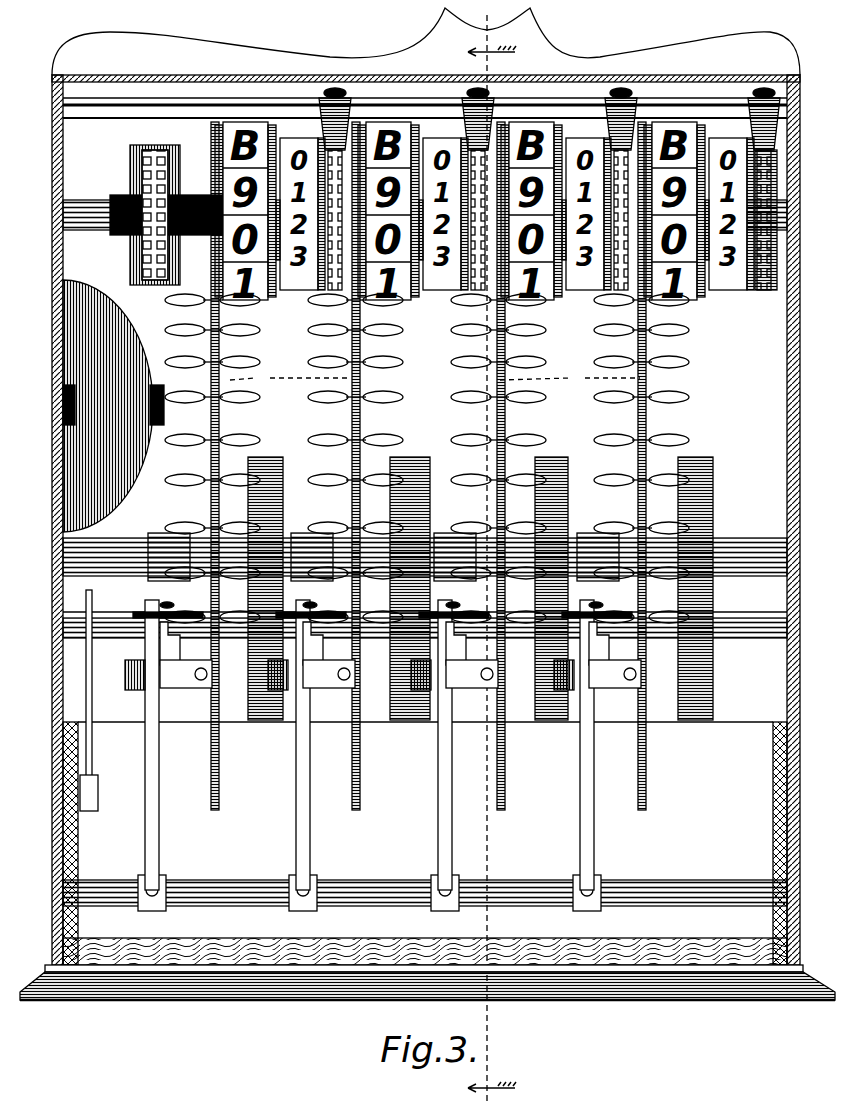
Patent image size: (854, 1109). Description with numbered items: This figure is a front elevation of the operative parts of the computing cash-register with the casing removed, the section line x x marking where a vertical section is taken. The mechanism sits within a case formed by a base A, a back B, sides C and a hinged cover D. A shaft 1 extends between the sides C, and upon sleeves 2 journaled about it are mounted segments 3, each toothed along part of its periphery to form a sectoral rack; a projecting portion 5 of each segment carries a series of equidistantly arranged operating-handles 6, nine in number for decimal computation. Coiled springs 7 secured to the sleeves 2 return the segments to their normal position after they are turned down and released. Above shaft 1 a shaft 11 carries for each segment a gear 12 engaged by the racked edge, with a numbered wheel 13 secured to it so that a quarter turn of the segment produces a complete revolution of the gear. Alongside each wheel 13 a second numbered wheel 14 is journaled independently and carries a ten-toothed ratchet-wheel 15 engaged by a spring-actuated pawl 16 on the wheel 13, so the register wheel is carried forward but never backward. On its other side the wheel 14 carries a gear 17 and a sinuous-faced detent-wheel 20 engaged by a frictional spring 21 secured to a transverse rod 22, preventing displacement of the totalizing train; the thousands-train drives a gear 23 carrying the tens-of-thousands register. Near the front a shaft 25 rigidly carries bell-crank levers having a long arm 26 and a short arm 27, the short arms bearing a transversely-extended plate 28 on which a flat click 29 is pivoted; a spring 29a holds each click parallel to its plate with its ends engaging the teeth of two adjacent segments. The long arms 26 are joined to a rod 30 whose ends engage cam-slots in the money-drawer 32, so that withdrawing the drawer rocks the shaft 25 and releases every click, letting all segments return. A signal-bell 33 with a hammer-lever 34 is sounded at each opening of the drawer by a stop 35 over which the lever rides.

The shaft 1 is at (110, 548).
The sleeves 2 is at (286, 538).
The segments 3 is at (219, 770).
The projecting portion of segment 5 is at (654, 760).
The operating-handles 6 is at (240, 400).
The coiled springs 7 is at (268, 462).
The shaft 11 is at (80, 200).
The gear 12 is at (215, 262).
The numbered wheel 13 is at (240, 122).
The second numbered wheel 14 is at (506, 297).
The ten-toothed ratchet-wheel 15 is at (505, 241).
The spring-actuated pawl 16 is at (274, 336).
The gear 17 is at (320, 118).
The sinuous-faced detent-wheel 20 is at (350, 140).
The frictional spring 21 is at (335, 90).
The transverse rod 22 is at (115, 100).
The gear 23 is at (180, 172).
The shaft 25 is at (63, 628).
The long arm 26 is at (159, 808).
The short arm 27 is at (411, 649).
The transversely-extended plate 28 is at (383, 621).
The flat click 29 is at (668, 725).
The spring 29a is at (369, 598).
The rod 30 is at (104, 880).
The money-drawer 32 is at (478, 804).
The signal-bell 33 is at (88, 280).
The hammer-lever 34 is at (92, 752).
The stop 35 is at (96, 811).
The base A is at (296, 998).
The back B is at (512, 235).
The sides C is at (52, 322).
The cover D is at (212, 75).
The section line x x is at (487, 17).